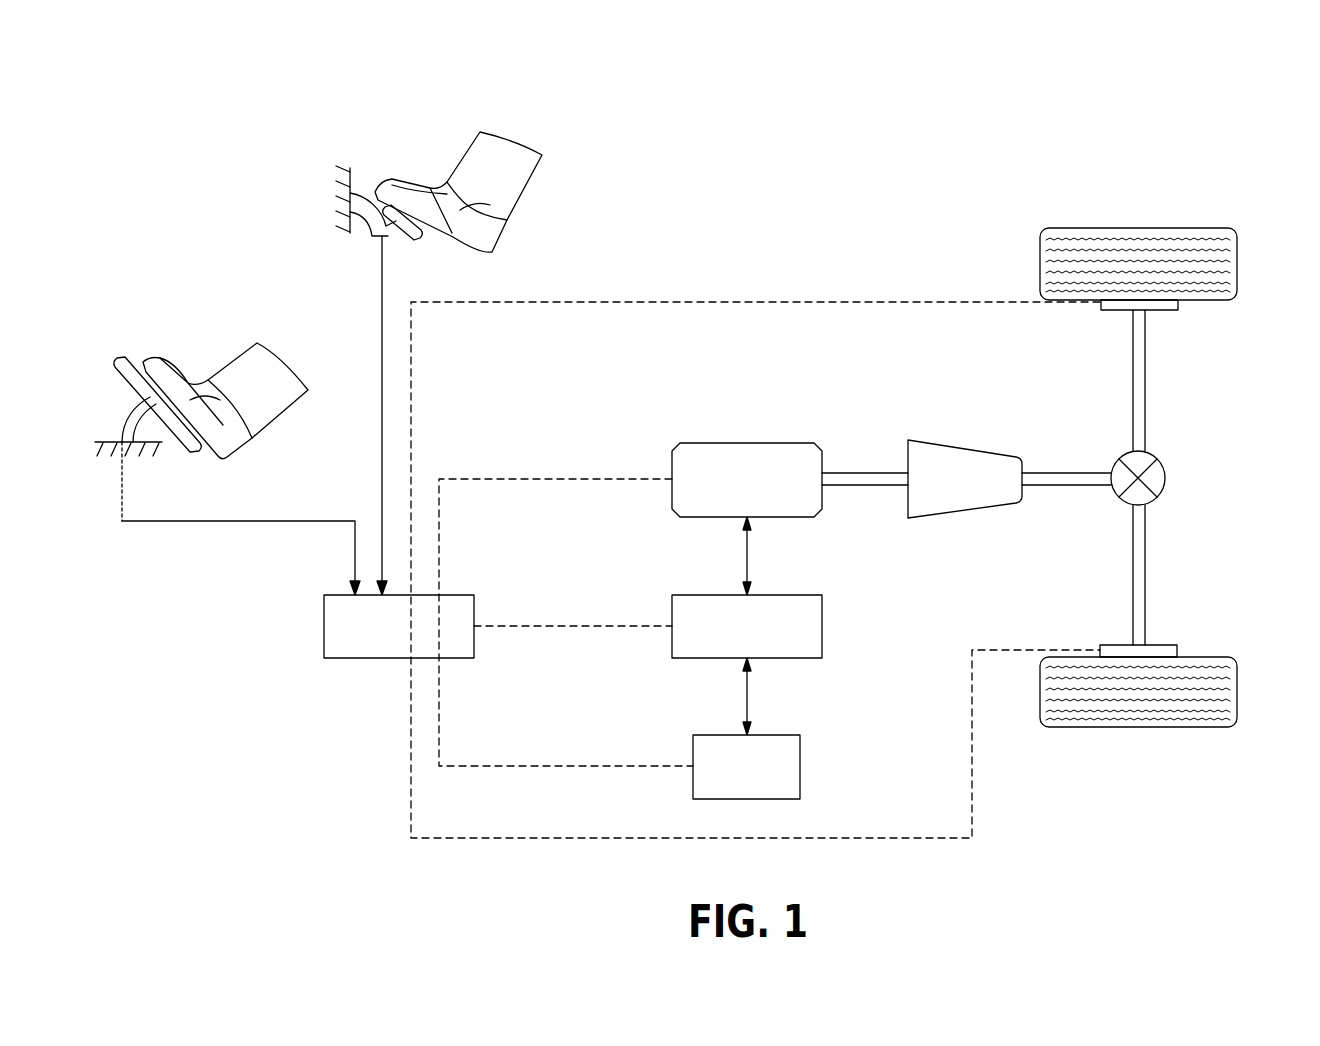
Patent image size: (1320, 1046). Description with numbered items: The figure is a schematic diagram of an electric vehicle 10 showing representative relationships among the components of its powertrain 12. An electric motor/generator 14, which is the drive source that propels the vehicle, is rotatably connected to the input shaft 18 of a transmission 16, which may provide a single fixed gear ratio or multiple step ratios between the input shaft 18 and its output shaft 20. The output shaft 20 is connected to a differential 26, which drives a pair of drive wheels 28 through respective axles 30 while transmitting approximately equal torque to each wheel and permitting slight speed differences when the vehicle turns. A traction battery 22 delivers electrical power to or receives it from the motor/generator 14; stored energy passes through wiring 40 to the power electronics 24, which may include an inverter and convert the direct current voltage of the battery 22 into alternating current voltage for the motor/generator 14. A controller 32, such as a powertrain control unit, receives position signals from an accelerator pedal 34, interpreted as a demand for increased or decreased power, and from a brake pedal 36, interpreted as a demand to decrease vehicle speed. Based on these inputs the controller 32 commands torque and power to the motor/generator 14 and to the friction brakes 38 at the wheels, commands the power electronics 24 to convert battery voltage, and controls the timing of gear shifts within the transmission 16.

The electric vehicle 10 is at (933, 105).
The powertrain 12 is at (812, 366).
The electric motor/generator 14 is at (747, 441).
The transmission 16 is at (965, 446).
The input shaft 18 is at (866, 471).
The output shaft 20 is at (1080, 471).
The traction battery 22 is at (800, 753).
The power electronics 24 is at (822, 617).
The differential 26 is at (1166, 480).
The drive wheels 28 is at (1120, 228).
The axles 30 is at (1149, 378).
The controller 32 is at (323, 617).
The accelerator pedal 34 is at (190, 334).
The brake pedal 36 is at (411, 131).
The friction brakes 38 is at (1180, 305).
The wiring 40 is at (757, 703).